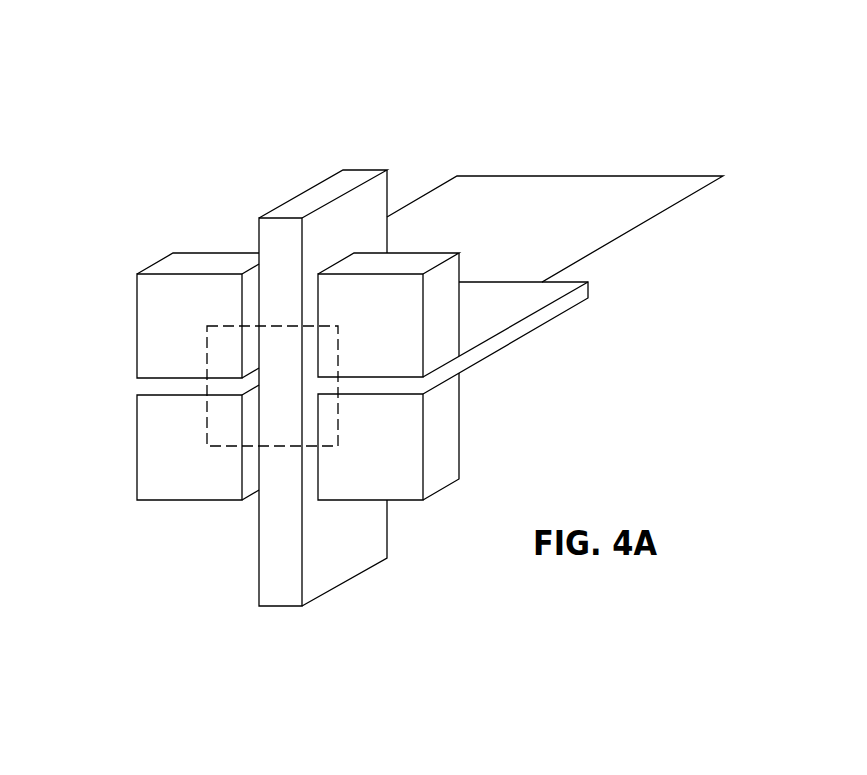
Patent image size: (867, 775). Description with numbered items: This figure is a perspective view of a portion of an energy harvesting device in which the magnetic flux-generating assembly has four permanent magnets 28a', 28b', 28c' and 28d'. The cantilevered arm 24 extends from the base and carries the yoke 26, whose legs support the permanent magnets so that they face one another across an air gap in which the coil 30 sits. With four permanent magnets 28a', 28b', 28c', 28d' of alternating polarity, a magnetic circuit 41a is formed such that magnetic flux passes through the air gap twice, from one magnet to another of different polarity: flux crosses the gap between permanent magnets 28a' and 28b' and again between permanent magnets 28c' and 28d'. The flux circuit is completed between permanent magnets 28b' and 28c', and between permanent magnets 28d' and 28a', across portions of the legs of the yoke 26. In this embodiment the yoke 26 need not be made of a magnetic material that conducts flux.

The cantilevered arm 24 is at (553, 193).
The yoke 26 is at (506, 338).
The permanent magnet 28a' is at (155, 315).
The permanent magnet 28b' is at (421, 334).
The permanent magnet 28c' is at (425, 436).
The permanent magnet 28d' is at (155, 442).
The coil 30 is at (328, 572).
The magnetic circuit 41a is at (207, 350).